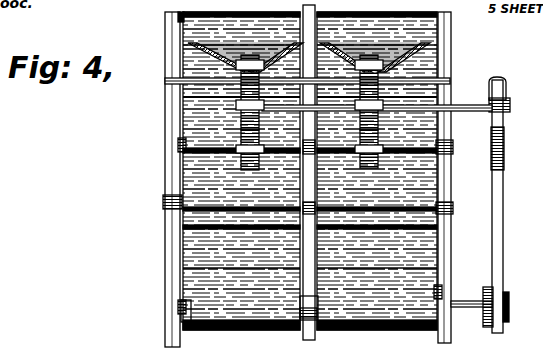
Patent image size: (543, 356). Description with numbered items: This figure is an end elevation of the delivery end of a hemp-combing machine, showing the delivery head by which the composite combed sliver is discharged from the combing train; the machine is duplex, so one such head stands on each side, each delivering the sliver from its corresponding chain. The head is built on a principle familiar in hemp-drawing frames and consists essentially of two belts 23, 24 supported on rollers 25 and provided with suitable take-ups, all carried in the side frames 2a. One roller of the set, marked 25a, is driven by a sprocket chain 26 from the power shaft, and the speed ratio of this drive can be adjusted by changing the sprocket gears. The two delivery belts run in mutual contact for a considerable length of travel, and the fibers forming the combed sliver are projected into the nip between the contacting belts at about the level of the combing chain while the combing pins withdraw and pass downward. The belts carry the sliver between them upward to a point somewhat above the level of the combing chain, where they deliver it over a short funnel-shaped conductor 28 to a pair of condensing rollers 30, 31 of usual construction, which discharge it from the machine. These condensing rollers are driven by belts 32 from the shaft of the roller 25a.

The side frames 2a is at (175, 173).
The belt 23 is at (458, 31).
The belt 24 is at (215, 268).
The rollers 25 is at (178, 14).
The roller 25a is at (316, 316).
The sprocket chain 26 is at (493, 318).
The funnel-shaped conductor 28 is at (170, 78).
The condensing roller 30 is at (243, 166).
The condensing roller 31 is at (166, 114).
The belts 32 is at (503, 200).